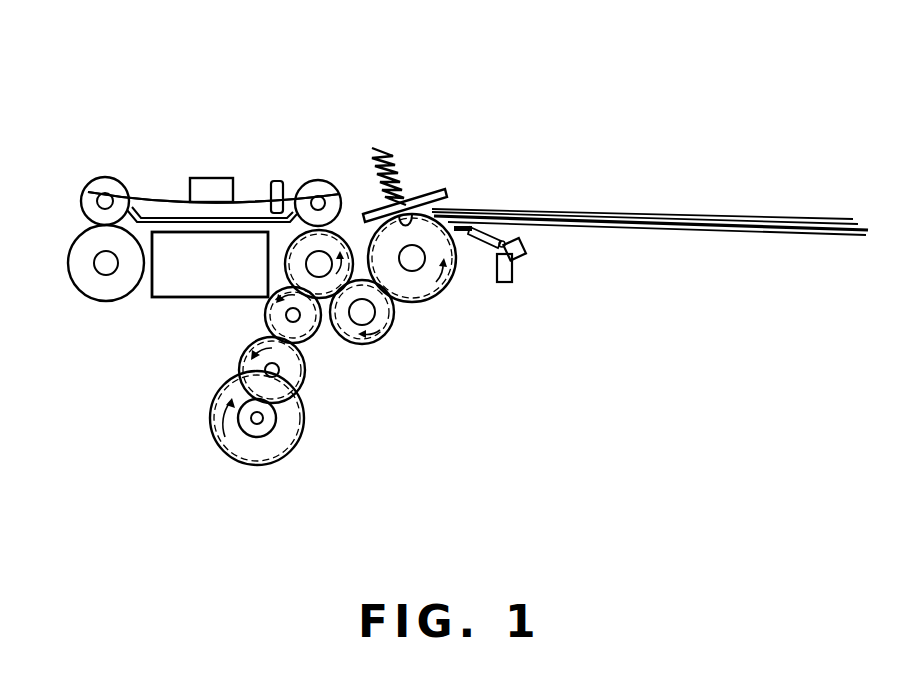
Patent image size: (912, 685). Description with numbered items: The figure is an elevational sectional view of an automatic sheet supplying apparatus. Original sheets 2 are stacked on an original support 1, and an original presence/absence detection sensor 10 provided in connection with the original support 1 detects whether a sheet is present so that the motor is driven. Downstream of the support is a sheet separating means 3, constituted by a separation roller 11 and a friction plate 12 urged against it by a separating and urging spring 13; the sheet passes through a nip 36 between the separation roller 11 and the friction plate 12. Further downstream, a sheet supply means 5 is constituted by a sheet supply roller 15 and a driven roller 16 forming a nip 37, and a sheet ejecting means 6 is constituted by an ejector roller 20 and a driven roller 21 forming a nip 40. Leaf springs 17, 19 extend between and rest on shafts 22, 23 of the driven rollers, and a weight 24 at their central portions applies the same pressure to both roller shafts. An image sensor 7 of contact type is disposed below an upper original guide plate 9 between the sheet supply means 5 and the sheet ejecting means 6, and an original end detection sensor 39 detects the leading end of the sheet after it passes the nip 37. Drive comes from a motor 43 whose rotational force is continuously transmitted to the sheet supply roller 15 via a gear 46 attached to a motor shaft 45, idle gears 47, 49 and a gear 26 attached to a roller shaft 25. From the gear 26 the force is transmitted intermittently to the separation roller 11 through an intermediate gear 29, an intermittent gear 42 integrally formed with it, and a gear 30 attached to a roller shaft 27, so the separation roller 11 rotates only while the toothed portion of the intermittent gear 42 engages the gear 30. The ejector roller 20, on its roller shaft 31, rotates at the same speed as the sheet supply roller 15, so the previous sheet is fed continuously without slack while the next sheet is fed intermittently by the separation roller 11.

The original support 1 is at (690, 237).
The original sheet 2 is at (622, 216).
The sheet separating means 3 is at (470, 185).
The sheet supply means 5 is at (350, 197).
The sheet ejecting means 6 is at (72, 210).
The image sensor 7 is at (168, 278).
The upper original guide plate 9 is at (152, 217).
The original presence/absence detection sensor 10 is at (510, 270).
The separation roller 11 is at (447, 292).
The friction plate 12 is at (440, 187).
The separating and urging spring 13 is at (382, 143).
The sheet supply roller 15 is at (317, 267).
The driven roller 16 is at (323, 181).
The leaf spring 17 is at (167, 198).
The leaf spring 19 is at (214, 197).
The ejector roller 20 is at (82, 298).
The driven roller 21 is at (102, 178).
The shaft 22 is at (316, 202).
The shaft 23 is at (104, 200).
The weight 24 is at (208, 188).
The roller shaft 25 is at (270, 297).
The gear 26 is at (345, 340).
The roller shaft 27 is at (415, 256).
The intermediate gear 29 is at (396, 315).
The gear 30 is at (432, 305).
The roller shaft 31 is at (106, 272).
The nip 36 is at (408, 207).
The nip 37 is at (283, 255).
The original end detection sensor 39 is at (275, 183).
The nip 40 is at (82, 248).
The intermittent gear 42 is at (368, 346).
The motor 43 is at (225, 442).
The motor shaft 45 is at (257, 424).
The gear 46 is at (270, 425).
The idle gear 47 is at (298, 393).
The idle gear 49 is at (317, 338).